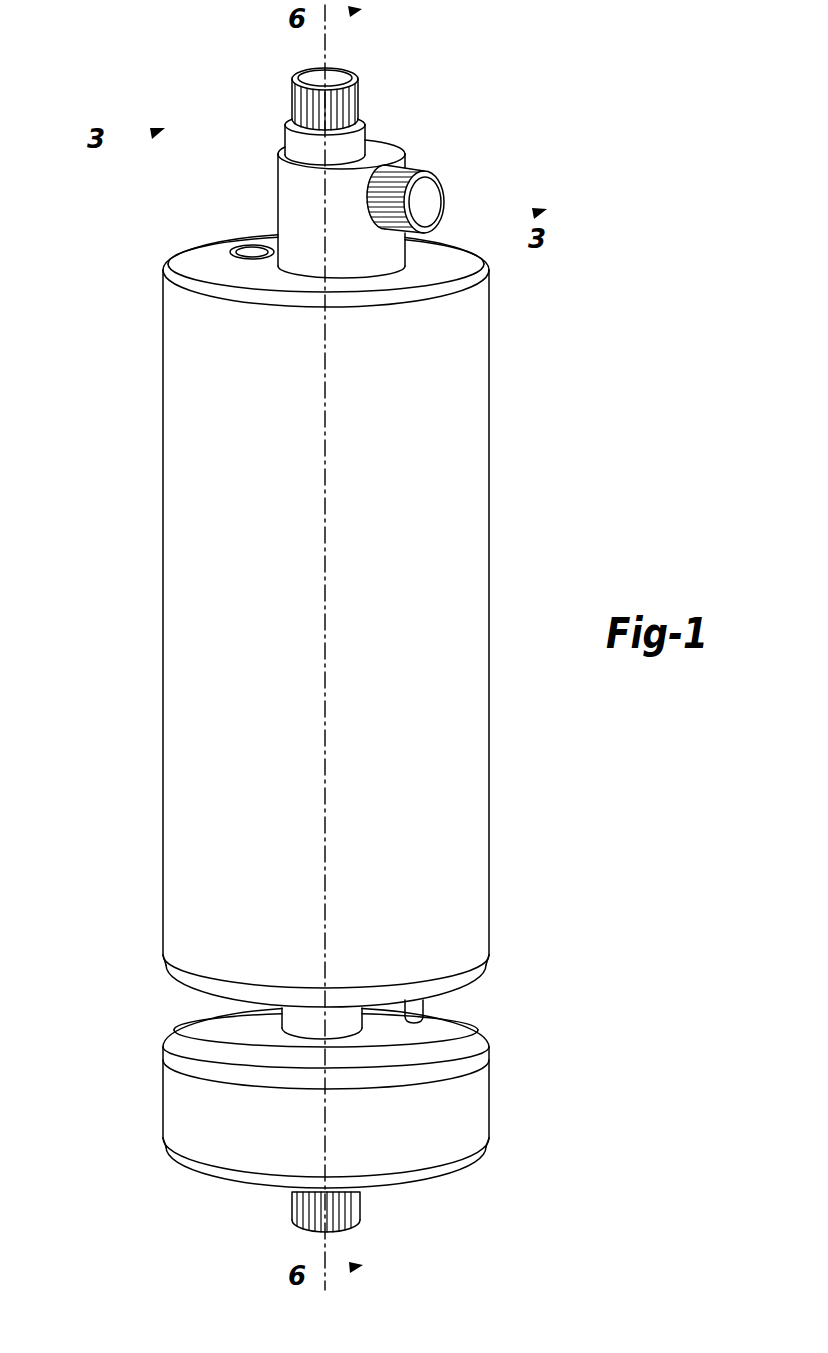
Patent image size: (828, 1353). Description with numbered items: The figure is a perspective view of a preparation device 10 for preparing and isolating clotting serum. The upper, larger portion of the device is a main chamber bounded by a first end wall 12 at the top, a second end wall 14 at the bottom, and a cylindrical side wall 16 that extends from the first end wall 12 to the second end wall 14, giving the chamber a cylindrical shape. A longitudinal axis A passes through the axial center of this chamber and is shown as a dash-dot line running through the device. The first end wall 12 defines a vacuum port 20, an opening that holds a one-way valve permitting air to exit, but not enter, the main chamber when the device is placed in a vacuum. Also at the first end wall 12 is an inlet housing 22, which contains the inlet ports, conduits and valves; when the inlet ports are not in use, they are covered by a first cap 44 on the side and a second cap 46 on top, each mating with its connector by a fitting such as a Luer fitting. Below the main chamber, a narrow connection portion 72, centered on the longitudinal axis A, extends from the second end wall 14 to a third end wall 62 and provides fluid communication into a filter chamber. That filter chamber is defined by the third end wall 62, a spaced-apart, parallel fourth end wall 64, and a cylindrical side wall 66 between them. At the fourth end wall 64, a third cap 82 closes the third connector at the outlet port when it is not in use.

The preparation device 10 is at (112, 385).
The first end wall 12 is at (202, 270).
The second end wall 14 is at (412, 1022).
The side wall 16 is at (475, 555).
The vacuum port 20 is at (246, 250).
The inlet housing 22 is at (282, 176).
The first cap 44 is at (428, 197).
The second cap 46 is at (356, 103).
The third end wall 62 is at (233, 1048).
The fourth end wall 64 is at (418, 1180).
The side wall 66 is at (478, 1100).
The connection portion 72 is at (292, 1027).
The third cap 82 is at (293, 1208).
The longitudinal axis A is at (330, 62).